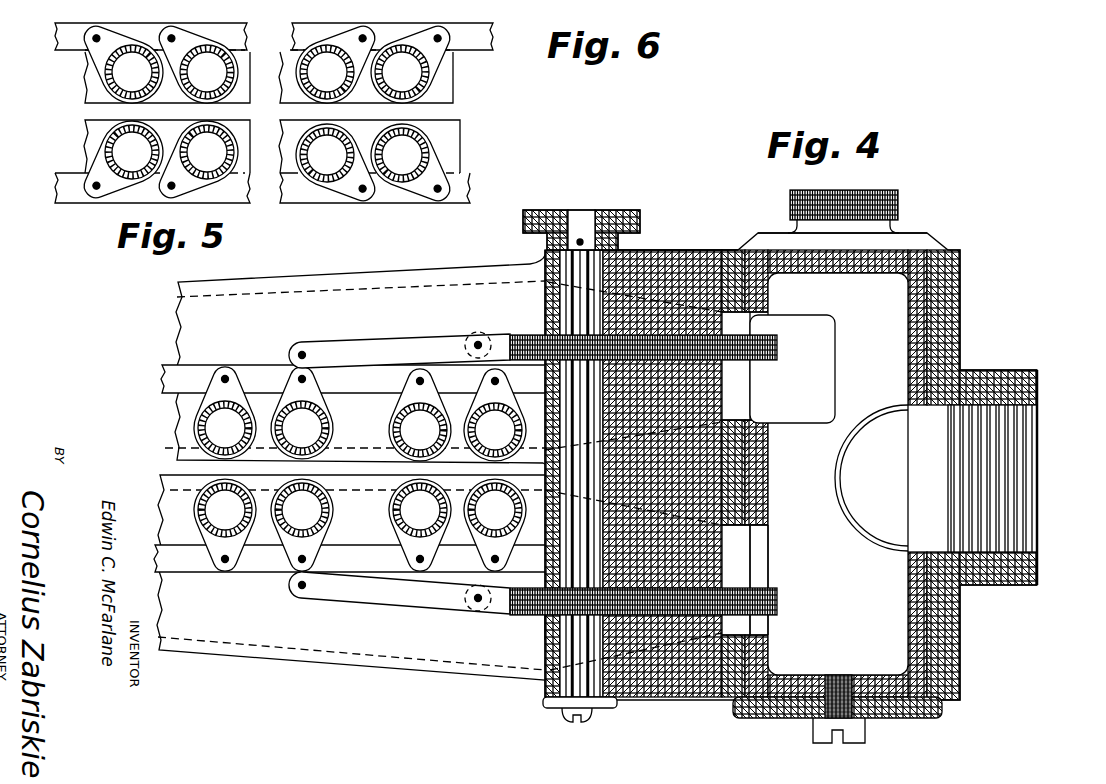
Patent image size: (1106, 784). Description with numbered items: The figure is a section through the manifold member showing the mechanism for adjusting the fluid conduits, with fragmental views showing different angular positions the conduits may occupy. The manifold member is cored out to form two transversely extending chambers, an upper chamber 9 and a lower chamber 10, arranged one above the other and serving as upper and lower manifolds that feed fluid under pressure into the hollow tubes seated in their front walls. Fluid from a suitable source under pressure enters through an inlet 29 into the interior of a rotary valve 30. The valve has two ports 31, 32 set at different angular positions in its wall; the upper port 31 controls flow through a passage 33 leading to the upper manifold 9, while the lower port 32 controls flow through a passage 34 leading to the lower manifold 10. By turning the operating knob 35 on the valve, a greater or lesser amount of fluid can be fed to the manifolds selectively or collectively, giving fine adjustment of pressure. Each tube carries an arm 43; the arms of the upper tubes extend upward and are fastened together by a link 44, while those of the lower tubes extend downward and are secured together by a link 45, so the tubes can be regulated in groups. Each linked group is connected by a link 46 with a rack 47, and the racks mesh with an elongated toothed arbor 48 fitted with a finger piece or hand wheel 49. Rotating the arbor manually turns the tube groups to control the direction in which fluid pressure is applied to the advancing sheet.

The upper chamber 9 is at (450, 281).
The lower chamber 10 is at (433, 660).
The inlet 29 is at (1010, 475).
The rotary valve 30 is at (923, 248).
The port 31 is at (837, 348).
The port 32 is at (762, 554).
The passage 33 is at (690, 307).
The passage 34 is at (655, 647).
The operating knob 35 is at (828, 189).
The arm 43 is at (214, 376).
The link 44 is at (263, 378).
The link 45 is at (262, 567).
The link 46 is at (383, 345).
The rack 47 is at (778, 340).
The elongated toothed arbor 48 is at (570, 628).
The finger piece or hand wheel 49 is at (608, 210).